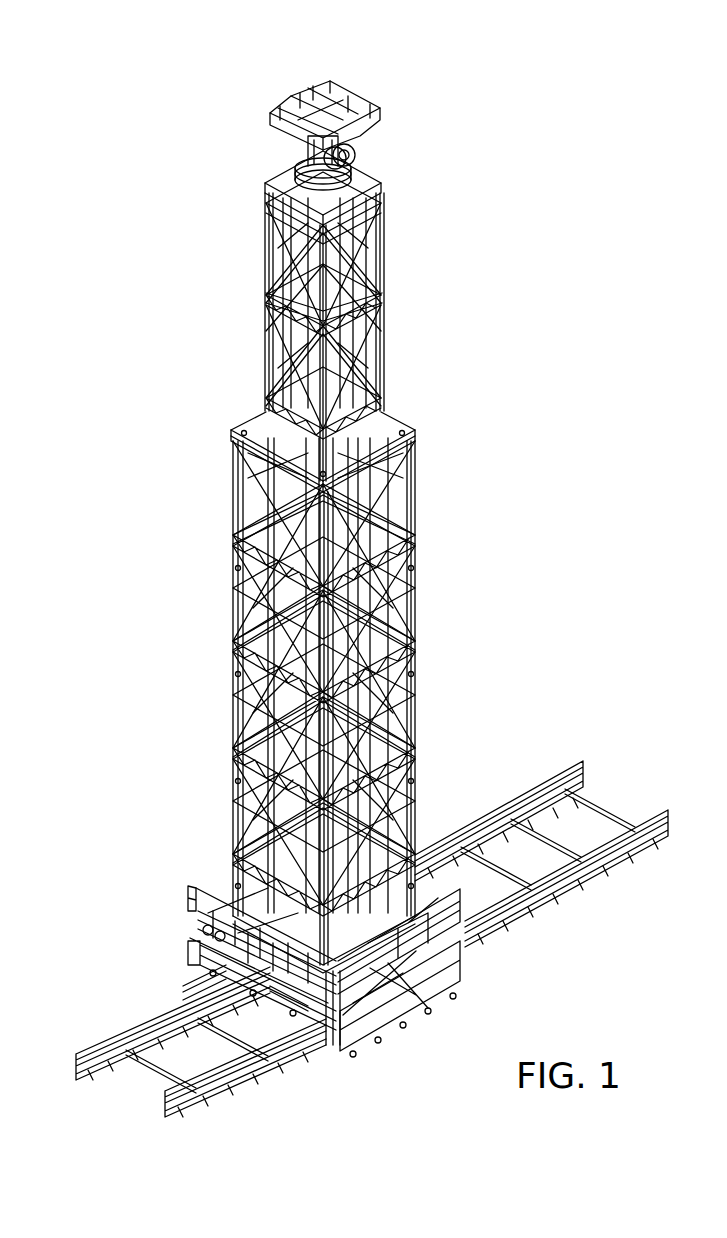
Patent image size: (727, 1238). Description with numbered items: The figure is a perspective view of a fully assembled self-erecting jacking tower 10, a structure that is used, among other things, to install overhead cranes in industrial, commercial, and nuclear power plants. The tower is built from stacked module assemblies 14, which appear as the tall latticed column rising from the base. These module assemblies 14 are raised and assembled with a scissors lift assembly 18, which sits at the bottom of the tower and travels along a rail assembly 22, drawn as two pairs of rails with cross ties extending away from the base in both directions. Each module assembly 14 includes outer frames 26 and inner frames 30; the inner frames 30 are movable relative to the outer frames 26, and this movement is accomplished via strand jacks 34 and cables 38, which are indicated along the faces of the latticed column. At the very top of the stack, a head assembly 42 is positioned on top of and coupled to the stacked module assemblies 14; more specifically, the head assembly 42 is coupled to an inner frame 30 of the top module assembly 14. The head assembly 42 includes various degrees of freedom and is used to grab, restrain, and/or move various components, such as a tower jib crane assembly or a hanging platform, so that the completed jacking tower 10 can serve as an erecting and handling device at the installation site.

The self-erecting jacking tower 10 is at (92, 338).
The module assemblies 14 is at (414, 503).
The scissors lift assembly 18 is at (442, 1000).
The rail assembly 22 is at (122, 1010).
The outer frames 26 is at (222, 508).
The inner frames 30 is at (378, 246).
The strand jacks 34 is at (407, 671).
The cables 38 is at (297, 747).
The head assembly 42 is at (360, 95).